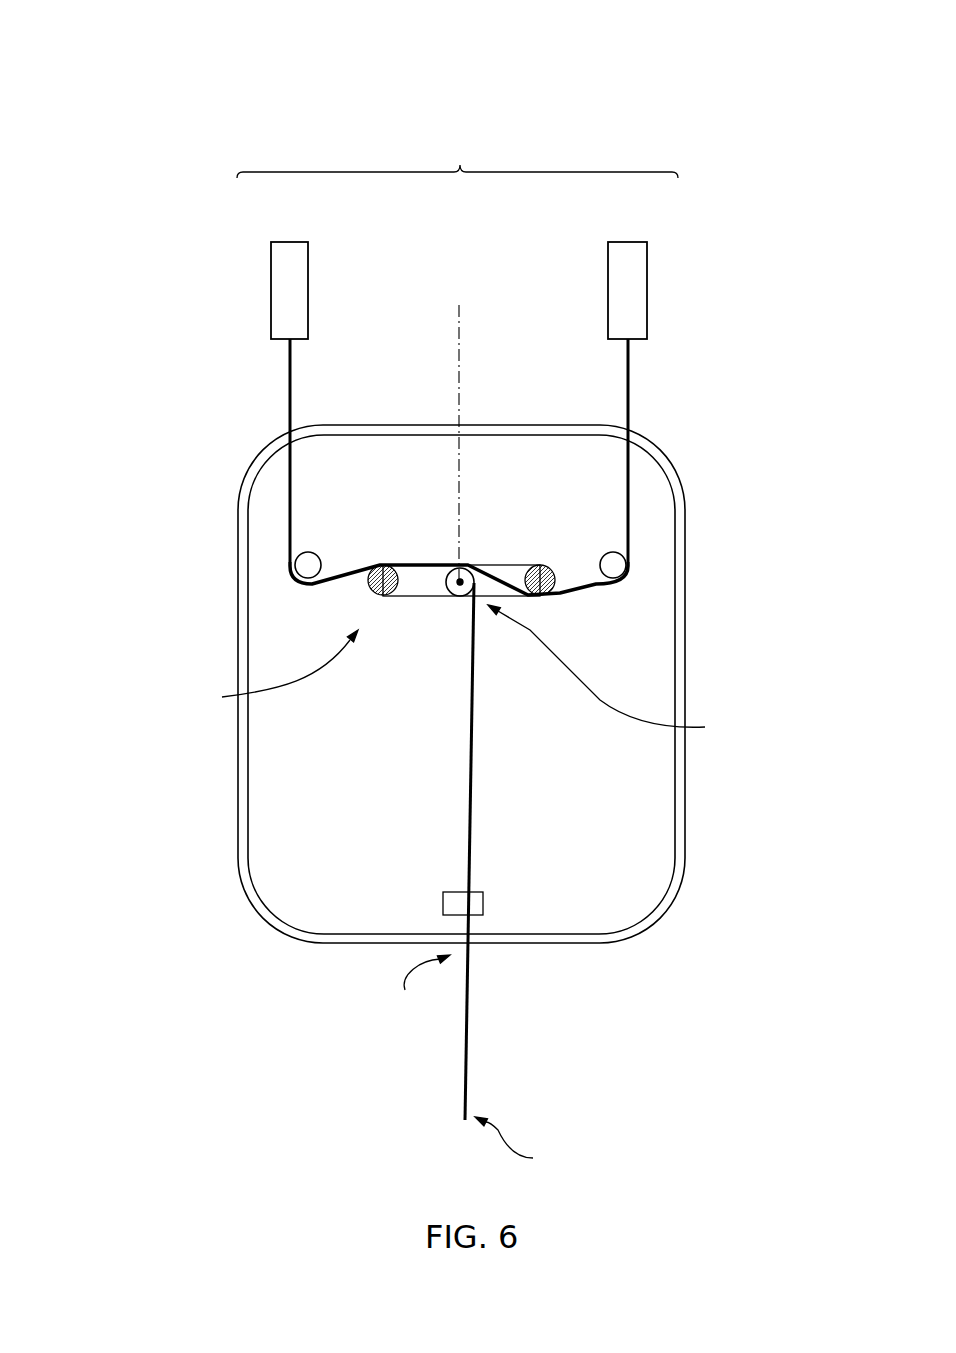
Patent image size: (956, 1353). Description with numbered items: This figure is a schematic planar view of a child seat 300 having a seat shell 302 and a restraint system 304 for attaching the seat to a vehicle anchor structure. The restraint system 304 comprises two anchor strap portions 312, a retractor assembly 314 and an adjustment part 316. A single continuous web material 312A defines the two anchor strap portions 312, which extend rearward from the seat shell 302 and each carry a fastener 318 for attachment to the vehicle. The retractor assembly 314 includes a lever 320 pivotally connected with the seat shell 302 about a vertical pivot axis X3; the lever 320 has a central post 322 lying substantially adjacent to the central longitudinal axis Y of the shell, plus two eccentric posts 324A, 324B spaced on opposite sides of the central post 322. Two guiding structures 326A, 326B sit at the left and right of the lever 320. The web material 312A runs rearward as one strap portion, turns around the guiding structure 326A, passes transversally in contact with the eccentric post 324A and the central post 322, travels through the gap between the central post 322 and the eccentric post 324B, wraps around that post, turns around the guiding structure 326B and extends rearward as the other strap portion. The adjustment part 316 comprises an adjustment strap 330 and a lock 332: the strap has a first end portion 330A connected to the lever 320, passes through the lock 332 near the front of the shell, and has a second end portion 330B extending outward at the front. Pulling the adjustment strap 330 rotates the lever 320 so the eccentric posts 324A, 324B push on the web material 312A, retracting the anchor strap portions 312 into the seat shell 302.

The child seat 300 is at (98, 39).
The seat shell 302 is at (675, 838).
The restraint system 304 is at (457, 158).
The anchor strap portions 312 is at (290, 398).
The web material 312A is at (598, 590).
The retractor assembly 314 is at (269, 670).
The adjustment part 316 is at (407, 982).
The fastener 318 is at (277, 298).
The lever 320 is at (435, 598).
The central post 322 is at (444, 578).
The eccentric post 324A is at (372, 590).
The eccentric post 324B is at (560, 590).
The guiding structure 326A is at (300, 565).
The guiding structure 326B is at (618, 565).
The adjustment strap 330 is at (468, 1040).
The first end portion 330A is at (626, 672).
The second end portion 330B is at (533, 1143).
The lock 332 is at (483, 903).
The pivot axis X3 is at (458, 582).
The central longitudinal axis Y is at (460, 328).